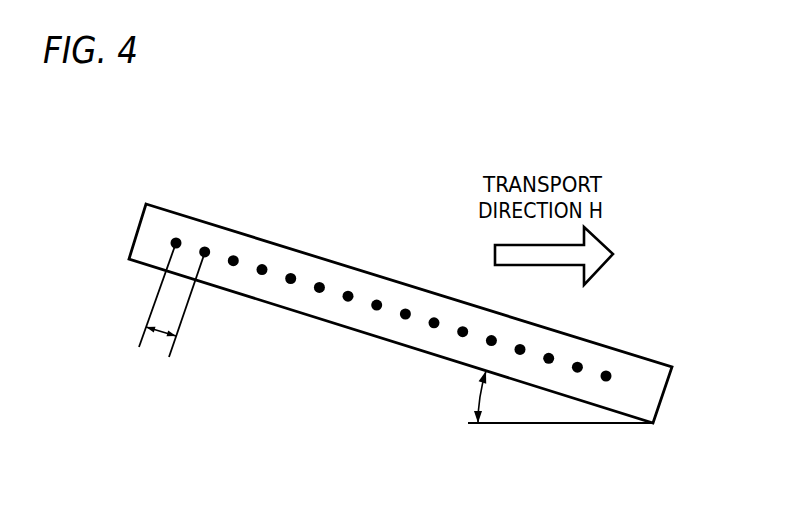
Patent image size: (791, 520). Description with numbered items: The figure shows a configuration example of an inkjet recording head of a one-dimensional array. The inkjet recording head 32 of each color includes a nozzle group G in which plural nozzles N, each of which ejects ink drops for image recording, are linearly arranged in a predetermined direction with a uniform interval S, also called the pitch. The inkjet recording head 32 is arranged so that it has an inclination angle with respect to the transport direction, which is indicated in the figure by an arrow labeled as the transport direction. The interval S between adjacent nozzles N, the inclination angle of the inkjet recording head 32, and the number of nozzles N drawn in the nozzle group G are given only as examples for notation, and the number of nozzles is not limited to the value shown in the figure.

The inkjet recording head 32 is at (168, 205).
The nozzles N is at (233, 256).
The interval S is at (161, 331).
The nozzle group G is at (642, 384).